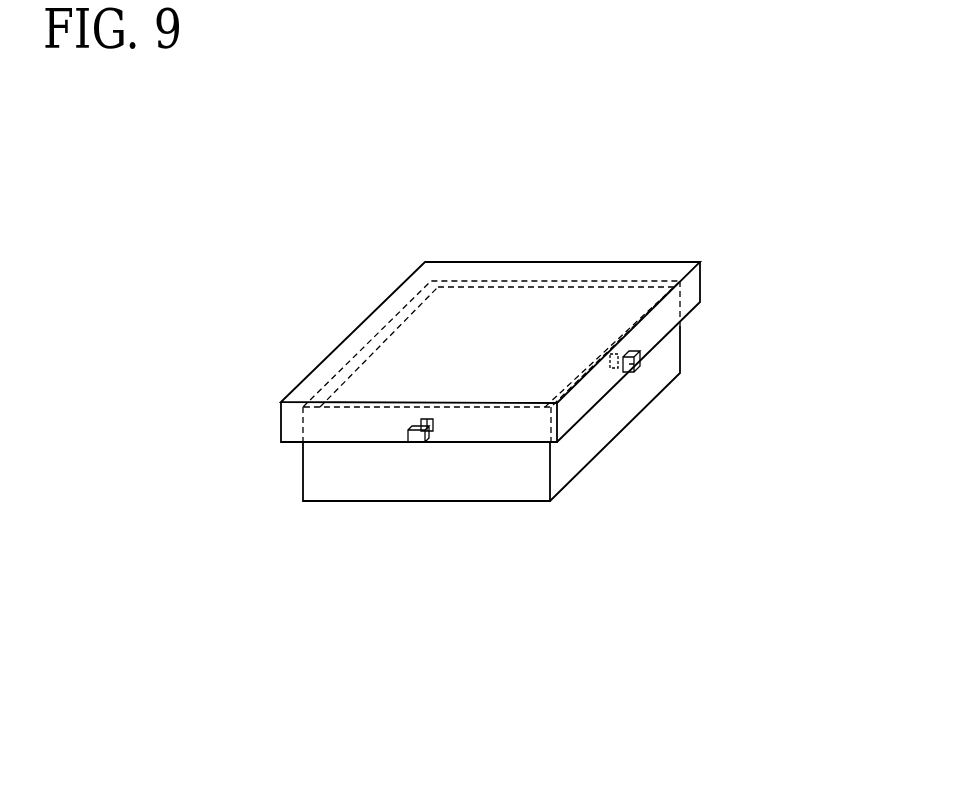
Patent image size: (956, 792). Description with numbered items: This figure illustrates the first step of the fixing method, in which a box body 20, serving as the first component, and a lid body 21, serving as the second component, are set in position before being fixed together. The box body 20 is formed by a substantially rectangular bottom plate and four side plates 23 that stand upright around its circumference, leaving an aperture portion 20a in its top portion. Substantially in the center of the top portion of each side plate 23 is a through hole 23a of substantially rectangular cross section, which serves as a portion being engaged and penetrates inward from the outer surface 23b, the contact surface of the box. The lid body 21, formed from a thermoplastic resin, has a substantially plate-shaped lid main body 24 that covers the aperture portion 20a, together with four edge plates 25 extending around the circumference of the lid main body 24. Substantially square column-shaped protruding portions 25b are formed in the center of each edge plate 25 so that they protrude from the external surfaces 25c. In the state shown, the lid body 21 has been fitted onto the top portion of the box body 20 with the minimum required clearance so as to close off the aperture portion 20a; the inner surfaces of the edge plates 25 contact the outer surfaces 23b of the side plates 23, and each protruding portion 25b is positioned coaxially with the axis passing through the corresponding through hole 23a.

The box body 20 is at (528, 487).
The aperture portion 20a is at (432, 288).
The lid body 21 is at (527, 262).
The side plate 23 is at (352, 475).
The through hole 23a is at (437, 424).
The outer surface 23b is at (308, 378).
The lid main body 24 is at (546, 302).
The edge plate 25 is at (378, 322).
The protruding portion 25b is at (410, 442).
The external surface 25c is at (368, 341).